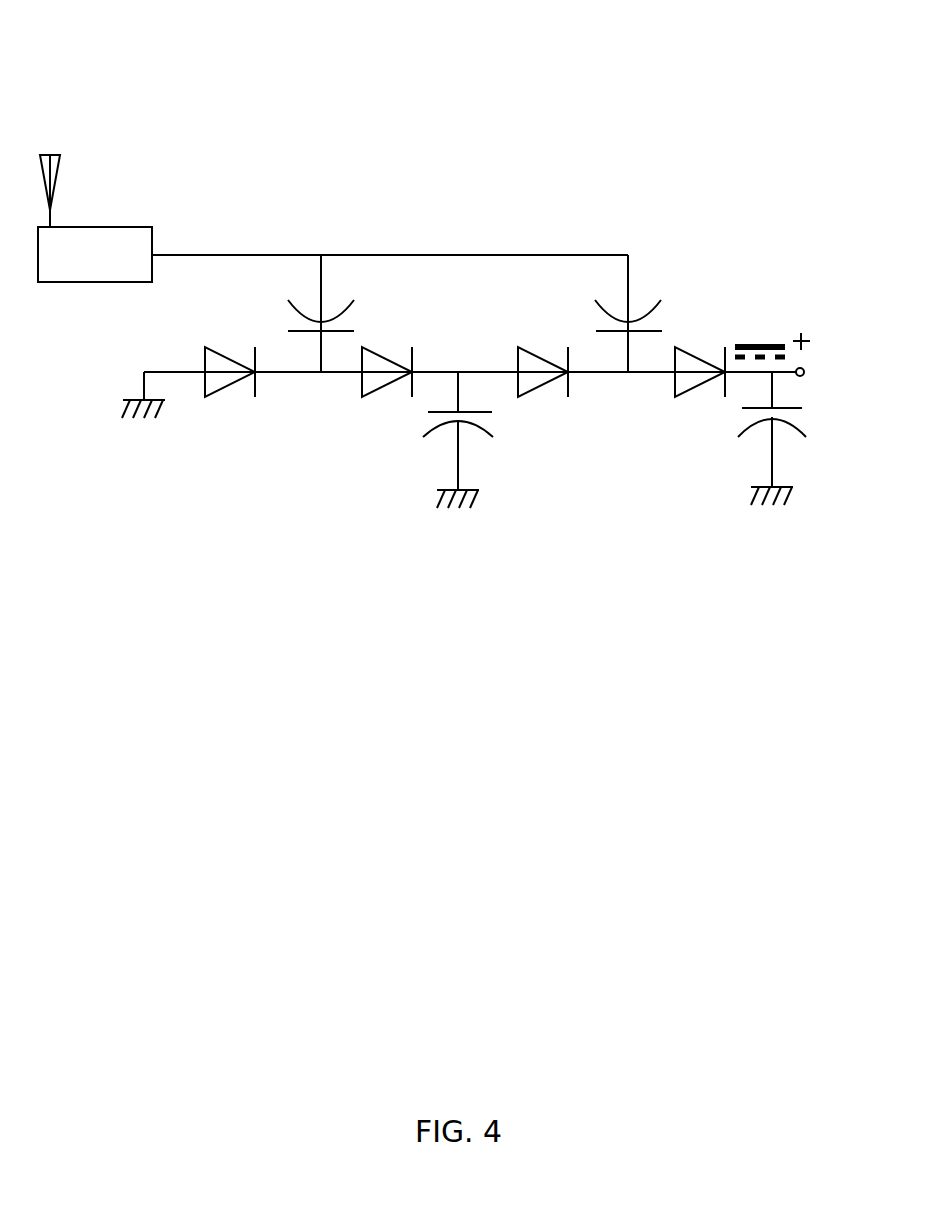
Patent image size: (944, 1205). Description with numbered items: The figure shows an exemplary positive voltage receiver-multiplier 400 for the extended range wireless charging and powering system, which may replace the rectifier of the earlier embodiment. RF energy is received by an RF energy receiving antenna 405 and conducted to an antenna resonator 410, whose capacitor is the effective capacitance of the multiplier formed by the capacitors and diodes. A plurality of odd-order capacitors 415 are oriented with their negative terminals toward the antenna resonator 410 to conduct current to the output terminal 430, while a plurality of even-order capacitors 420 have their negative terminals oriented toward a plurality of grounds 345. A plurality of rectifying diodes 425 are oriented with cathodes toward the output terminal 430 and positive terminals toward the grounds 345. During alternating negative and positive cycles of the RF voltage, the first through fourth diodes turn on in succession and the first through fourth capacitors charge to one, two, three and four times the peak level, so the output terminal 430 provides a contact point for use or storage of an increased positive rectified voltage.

The positive voltage receiver-multiplier 400 is at (88, 80).
The RF energy receiving antenna 405 is at (81, 162).
The antenna resonator 410 is at (95, 254).
The odd-order capacitors 415 is at (470, 313).
The even-order capacitors 420 is at (415, 434).
The rectifying diodes 425 is at (343, 412).
The output terminal 430 is at (796, 341).
The grounds 345 is at (143, 450).